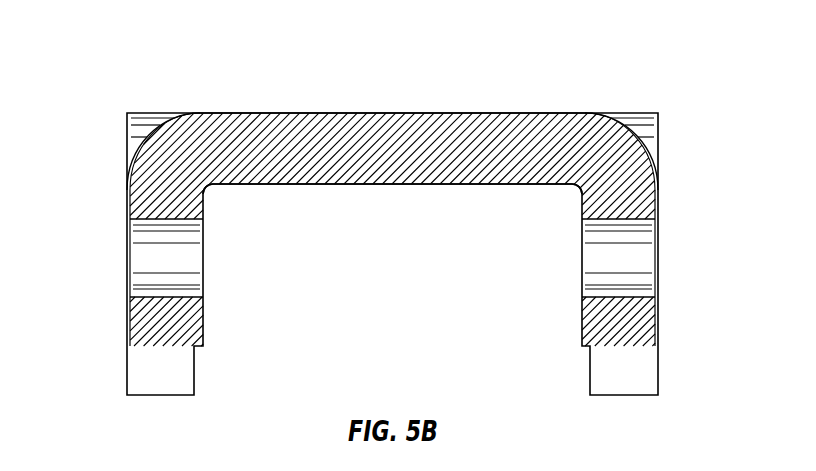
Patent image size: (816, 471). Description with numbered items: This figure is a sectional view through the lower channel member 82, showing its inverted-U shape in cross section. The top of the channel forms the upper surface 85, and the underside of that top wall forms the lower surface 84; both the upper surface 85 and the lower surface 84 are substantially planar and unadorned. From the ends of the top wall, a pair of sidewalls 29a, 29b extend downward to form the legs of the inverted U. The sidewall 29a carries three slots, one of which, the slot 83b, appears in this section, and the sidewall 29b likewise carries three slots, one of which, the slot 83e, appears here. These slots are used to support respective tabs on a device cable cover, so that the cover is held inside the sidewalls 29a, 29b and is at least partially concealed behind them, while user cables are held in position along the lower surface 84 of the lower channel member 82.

The lower channel member 82 is at (115, 62).
The upper surface 85 is at (393, 113).
The lower surface 84 is at (393, 184).
The sidewall 29a is at (127, 200).
The sidewall 29b is at (658, 197).
The slot 83b is at (137, 260).
The slot 83e is at (646, 257).